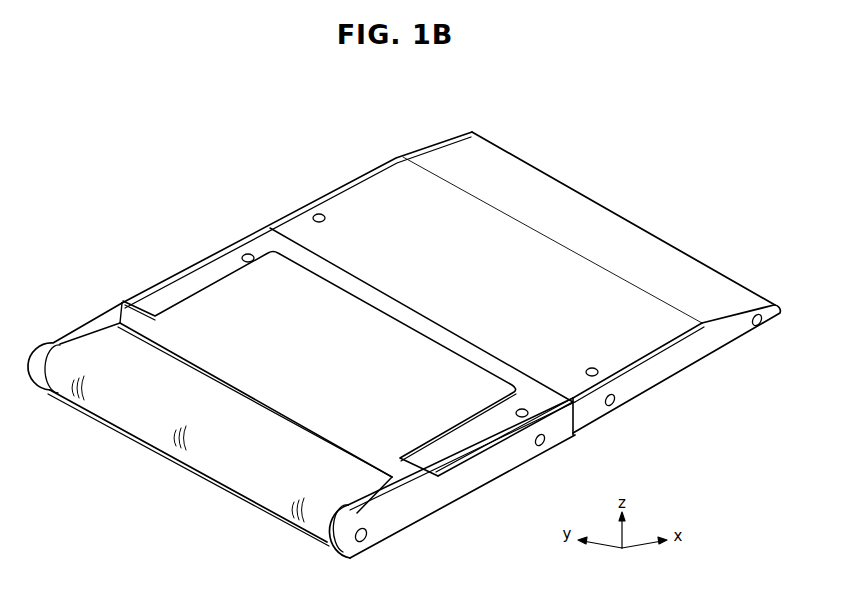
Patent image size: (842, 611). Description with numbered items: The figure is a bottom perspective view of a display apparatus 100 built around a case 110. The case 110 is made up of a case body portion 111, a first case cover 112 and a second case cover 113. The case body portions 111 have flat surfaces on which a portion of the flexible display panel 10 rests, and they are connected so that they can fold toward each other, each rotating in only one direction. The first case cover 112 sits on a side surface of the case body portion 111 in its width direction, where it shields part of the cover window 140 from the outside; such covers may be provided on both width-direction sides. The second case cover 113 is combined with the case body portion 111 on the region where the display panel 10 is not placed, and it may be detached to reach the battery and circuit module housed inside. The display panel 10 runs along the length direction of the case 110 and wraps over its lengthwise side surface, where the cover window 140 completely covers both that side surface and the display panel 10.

The display apparatus 100 is at (164, 139).
The case 110 is at (611, 189).
The case body portion 111 is at (503, 235).
The first case cover 112 is at (665, 370).
The second case cover 113 is at (241, 308).
The display panel 10 is at (155, 425).
The cover window 140 is at (195, 467).